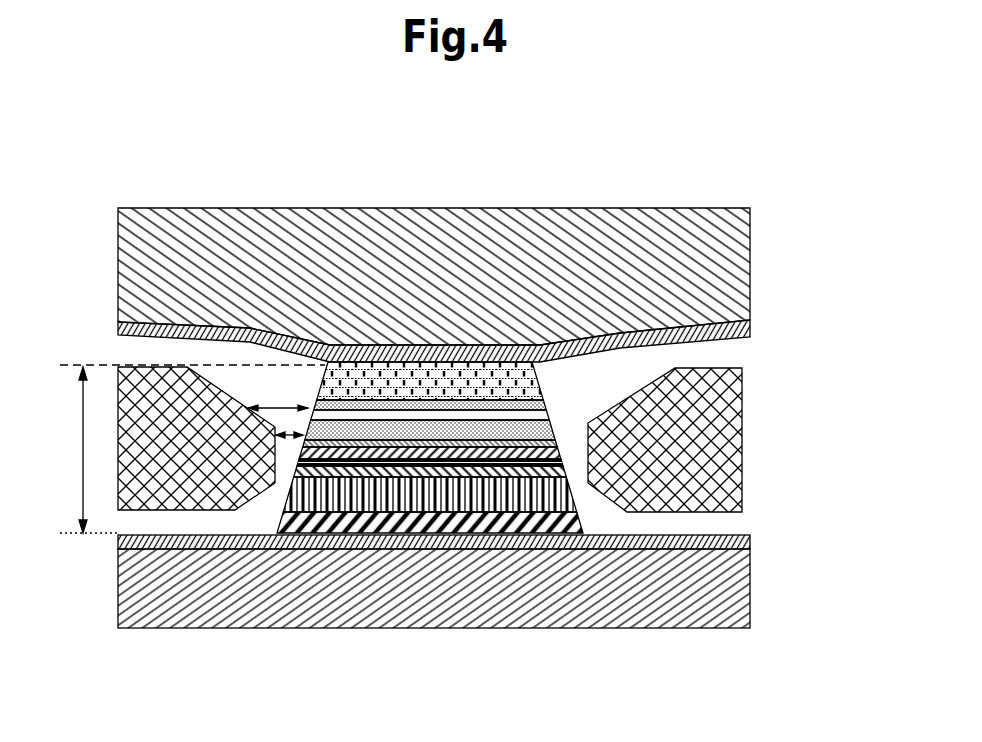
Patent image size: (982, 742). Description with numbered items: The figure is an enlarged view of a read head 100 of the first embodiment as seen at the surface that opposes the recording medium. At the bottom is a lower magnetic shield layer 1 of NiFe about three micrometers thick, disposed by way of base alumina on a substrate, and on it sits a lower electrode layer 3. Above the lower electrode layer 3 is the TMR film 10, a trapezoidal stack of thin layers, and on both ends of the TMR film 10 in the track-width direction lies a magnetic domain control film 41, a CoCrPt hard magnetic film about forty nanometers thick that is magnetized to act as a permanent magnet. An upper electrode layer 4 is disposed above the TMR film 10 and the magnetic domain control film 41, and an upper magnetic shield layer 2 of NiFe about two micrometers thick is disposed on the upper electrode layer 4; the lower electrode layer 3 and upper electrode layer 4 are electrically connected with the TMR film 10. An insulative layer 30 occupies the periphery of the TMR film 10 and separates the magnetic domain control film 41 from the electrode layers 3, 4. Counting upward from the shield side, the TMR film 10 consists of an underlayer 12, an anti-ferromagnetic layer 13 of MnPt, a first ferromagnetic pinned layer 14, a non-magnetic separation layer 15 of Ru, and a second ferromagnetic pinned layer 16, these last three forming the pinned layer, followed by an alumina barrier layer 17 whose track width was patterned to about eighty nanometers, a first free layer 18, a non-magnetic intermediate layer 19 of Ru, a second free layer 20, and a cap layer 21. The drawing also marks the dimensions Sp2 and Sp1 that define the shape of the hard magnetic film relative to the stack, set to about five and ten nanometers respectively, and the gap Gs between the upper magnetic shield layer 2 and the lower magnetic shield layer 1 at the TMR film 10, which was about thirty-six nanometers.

The lower magnetic shield layer 1 is at (718, 598).
The upper magnetic shield layer 2 is at (555, 232).
The lower electrode layer 3 is at (750, 543).
The upper electrode layer 4 is at (748, 328).
The TMR film 10 is at (547, 531).
The underlayer 12 is at (560, 522).
The anti-ferromagnetic layer 13 is at (480, 495).
The first ferromagnetic pinned layer 14 is at (445, 471).
The non-magnetic separation layer 15 is at (420, 463).
The second ferromagnetic pinned layer 16 is at (395, 453).
The barrier layer 17 is at (370, 444).
The free layer 1 18 is at (345, 430).
The non-magnetic intermediate layer 19 is at (337, 415).
The free layer 2 20 is at (334, 405).
The cap layer 21 is at (332, 385).
The insulative layer 30 is at (612, 517).
The magnetic domain control film 41 is at (710, 460).
The read head 100 is at (488, 429).
The gap Gs is at (183, 449).
The element Sp1 is at (290, 440).
The element Sp2 is at (278, 397).